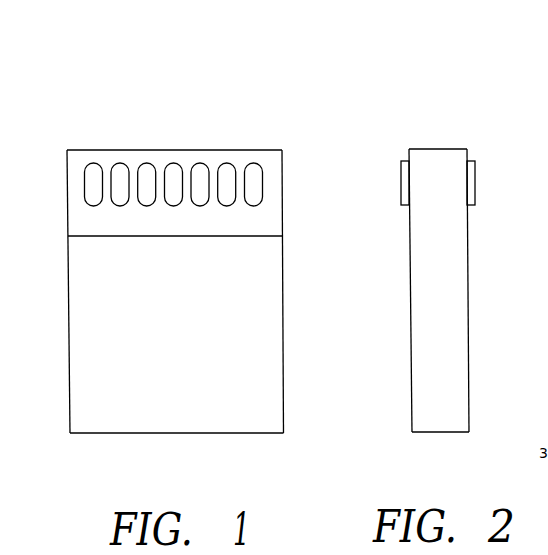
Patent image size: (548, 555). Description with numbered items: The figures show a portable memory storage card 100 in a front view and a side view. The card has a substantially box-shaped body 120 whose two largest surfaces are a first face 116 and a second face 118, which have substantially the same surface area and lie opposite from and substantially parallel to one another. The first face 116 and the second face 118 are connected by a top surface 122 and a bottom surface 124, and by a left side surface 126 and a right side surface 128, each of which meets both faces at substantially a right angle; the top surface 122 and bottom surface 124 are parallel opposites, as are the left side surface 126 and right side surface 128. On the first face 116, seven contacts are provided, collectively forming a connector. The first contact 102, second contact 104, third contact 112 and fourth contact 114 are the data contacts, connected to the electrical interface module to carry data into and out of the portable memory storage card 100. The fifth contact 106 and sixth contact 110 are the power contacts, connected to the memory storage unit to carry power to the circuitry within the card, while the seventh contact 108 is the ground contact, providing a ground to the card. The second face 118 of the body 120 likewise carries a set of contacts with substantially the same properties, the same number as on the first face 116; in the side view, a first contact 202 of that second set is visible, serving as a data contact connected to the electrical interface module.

In FIG. 1, the portable memory storage card 100 is at (68, 92).
In FIG. 1, the first contact 102 is at (92, 163).
In FIG. 1, the second contact 104 is at (120, 163).
In FIG. 1, the fifth contact 106 is at (146, 163).
In FIG. 1, the seventh contact 108 is at (174, 163).
In FIG. 1, the sixth contact 110 is at (200, 163).
In FIG. 1, the third contact 112 is at (226, 163).
In FIG. 1, the fourth contact 114 is at (254, 163).
In FIG. 2, the fourth contact 114 is at (401, 175).
In FIG. 1, the first face 116 is at (107, 418).
In FIG. 2, the first face 116 is at (409, 235).
In FIG. 2, the second face 118 is at (469, 362).
In FIG. 1, the body 120 is at (264, 407).
In FIG. 1, the top surface 122 is at (78, 150).
In FIG. 2, the top surface 122 is at (441, 149).
In FIG. 1, the bottom surface 124 is at (195, 433).
In FIG. 2, the bottom surface 124 is at (445, 432).
In FIG. 1, the left side surface 126 is at (67, 283).
In FIG. 1, the right side surface 128 is at (283, 317).
In FIG. 2, the first contact 202 is at (475, 173).